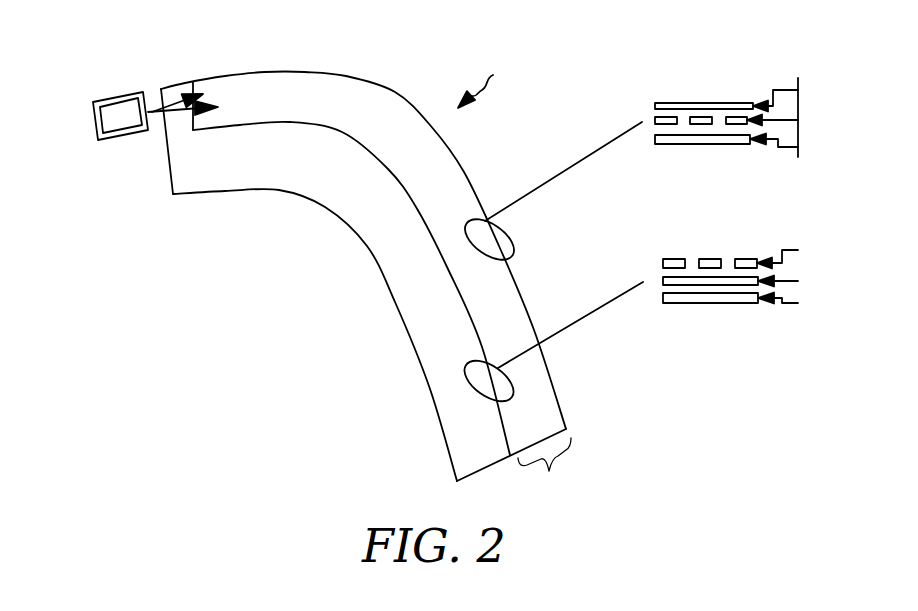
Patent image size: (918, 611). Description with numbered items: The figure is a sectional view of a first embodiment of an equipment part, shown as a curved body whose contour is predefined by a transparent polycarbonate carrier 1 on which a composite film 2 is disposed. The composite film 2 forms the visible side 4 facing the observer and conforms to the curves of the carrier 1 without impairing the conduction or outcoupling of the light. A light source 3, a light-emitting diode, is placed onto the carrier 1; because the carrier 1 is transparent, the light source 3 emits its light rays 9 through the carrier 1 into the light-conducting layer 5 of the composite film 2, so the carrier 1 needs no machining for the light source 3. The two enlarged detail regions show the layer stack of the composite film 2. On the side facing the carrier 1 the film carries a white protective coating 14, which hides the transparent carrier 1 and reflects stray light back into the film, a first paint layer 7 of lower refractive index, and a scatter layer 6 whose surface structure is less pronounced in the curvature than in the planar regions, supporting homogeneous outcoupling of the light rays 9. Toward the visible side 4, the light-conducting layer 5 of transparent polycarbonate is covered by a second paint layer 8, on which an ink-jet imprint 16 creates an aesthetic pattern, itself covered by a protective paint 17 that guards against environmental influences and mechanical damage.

The carrier 1 is at (363, 258).
The composite film 2 is at (544, 470).
The light source 3 is at (117, 113).
The visible side 4 is at (483, 84).
The light-conducting layer 5 is at (316, 82).
The scatter layer 6 is at (790, 250).
The first paint layer 7 is at (783, 281).
The second paint layer 8 is at (798, 147).
The light rays 9 is at (206, 105).
The protective coating 14 is at (783, 303).
The imprint 16 is at (798, 112).
The protective paint 17 is at (798, 88).